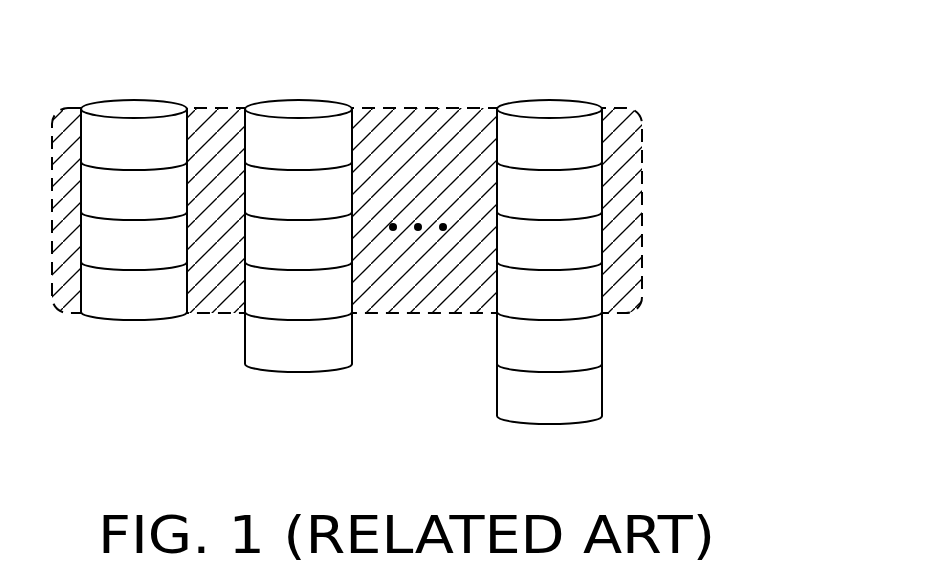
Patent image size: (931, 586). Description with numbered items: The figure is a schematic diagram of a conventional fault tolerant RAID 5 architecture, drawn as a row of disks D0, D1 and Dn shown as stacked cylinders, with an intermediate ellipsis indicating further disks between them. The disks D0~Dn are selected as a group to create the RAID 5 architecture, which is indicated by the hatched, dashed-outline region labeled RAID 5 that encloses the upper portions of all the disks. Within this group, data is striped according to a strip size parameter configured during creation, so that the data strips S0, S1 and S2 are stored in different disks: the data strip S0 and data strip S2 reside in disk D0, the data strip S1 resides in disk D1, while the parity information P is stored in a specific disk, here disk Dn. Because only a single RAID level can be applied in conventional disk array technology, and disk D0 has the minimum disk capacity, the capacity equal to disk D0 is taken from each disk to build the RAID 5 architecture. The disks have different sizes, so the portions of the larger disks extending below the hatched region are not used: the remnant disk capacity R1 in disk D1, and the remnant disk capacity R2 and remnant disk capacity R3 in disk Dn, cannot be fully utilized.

The disk D0 is at (134, 166).
The disk D1 is at (298, 192).
The disk Dn is at (549, 218).
The RAID 5 architecture RAID 5 is at (628, 186).
The data strip S0 is at (134, 142).
The data strip S1 is at (298, 142).
The data strip S2 is at (134, 192).
The parity information P is at (549, 142).
The remnant disk capacity R1 is at (298, 344).
The remnant disk capacity R2 is at (549, 344).
The remnant disk capacity R3 is at (549, 396).